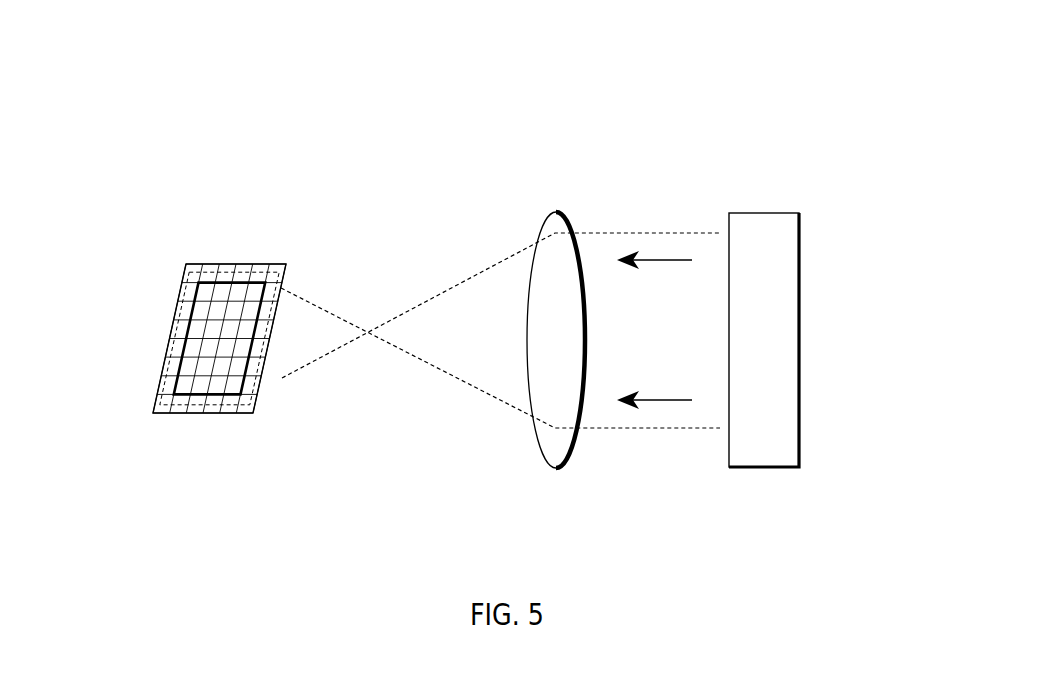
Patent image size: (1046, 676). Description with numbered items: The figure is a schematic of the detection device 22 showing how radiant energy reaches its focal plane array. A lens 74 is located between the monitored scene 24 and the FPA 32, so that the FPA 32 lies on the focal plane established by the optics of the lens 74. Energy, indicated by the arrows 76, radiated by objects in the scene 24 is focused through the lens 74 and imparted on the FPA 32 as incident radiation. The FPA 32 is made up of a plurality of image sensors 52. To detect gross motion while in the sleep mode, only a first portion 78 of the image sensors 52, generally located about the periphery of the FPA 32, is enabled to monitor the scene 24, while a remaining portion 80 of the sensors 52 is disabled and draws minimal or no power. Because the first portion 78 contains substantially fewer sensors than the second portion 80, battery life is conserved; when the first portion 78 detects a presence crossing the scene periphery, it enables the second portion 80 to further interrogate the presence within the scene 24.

The detection device 22 is at (795, 268).
The monitored scene 24 is at (800, 288).
The focal plane array 32 is at (221, 319).
The image sensors 52 is at (221, 338).
The lens 74 is at (548, 383).
The arrows (radiated energy) 76 is at (650, 262).
The first portion of the image sensors 78 is at (253, 407).
The remaining portion of the image sensors 80 is at (180, 345).